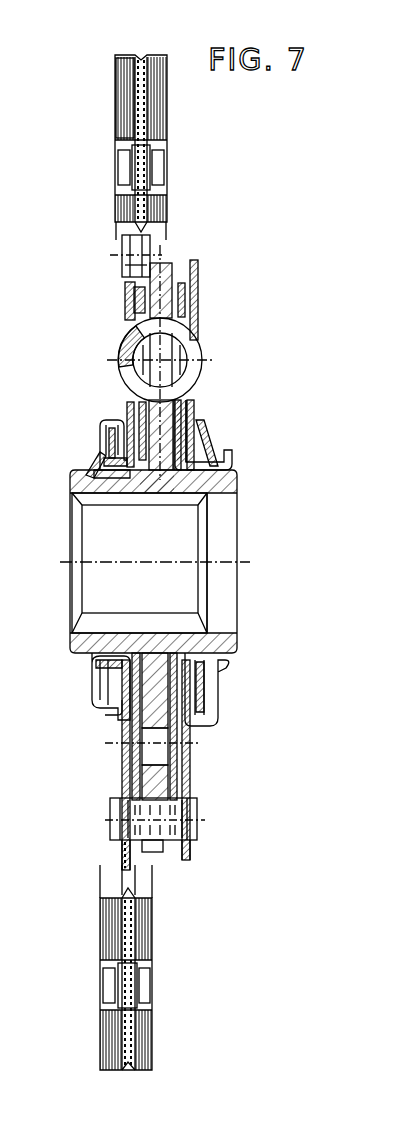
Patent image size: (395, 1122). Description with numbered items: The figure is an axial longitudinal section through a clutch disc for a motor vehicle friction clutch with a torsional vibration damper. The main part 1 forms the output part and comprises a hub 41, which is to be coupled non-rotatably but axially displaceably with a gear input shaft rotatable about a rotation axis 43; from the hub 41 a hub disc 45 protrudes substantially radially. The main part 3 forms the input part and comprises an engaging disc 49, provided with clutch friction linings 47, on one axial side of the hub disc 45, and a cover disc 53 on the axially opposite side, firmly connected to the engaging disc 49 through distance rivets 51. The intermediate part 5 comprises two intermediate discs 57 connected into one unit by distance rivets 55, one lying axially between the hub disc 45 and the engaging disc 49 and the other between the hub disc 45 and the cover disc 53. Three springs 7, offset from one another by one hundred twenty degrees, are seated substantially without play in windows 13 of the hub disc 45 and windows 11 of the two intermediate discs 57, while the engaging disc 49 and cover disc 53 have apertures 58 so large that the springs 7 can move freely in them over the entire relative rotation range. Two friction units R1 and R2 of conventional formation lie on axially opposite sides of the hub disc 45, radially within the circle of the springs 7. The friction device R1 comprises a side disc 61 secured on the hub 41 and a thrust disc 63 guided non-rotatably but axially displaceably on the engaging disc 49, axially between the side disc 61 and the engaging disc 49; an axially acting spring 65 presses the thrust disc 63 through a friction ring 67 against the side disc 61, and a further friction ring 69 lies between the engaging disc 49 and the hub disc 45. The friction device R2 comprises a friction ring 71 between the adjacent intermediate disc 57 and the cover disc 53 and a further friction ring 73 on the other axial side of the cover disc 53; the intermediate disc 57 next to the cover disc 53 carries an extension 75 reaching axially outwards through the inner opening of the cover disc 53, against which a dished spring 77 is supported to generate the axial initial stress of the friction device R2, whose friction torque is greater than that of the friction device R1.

The main part 1 is at (244, 574).
The main part 3 is at (141, 50).
The intermediate part 5 is at (178, 266).
The springs 7 is at (128, 343).
The windows 11 is at (126, 366).
The windows 13 is at (152, 372).
The hub 41 is at (94, 505).
The rotation axis 43 is at (82, 583).
The hub disc 45 is at (163, 262).
The clutch friction linings 47 is at (120, 101).
The engaging disc 49 is at (127, 290).
The distance rivets 51 is at (151, 840).
The cover disc 53 is at (199, 266).
The distance rivets 55 is at (150, 752).
The intermediate discs 57 is at (185, 292).
The apertures 58 is at (131, 314).
The side disc 61 is at (100, 437).
The thrust disc 63 is at (113, 420).
The axially acting spring 65 is at (127, 440).
The friction ring 67 is at (93, 463).
The friction ring 69 is at (133, 464).
The friction ring 71 is at (197, 411).
The friction ring 73 is at (228, 450).
The extension 75 is at (233, 472).
The dished spring 77 is at (213, 434).
The friction device R1 is at (70, 455).
The friction device R2 is at (242, 462).